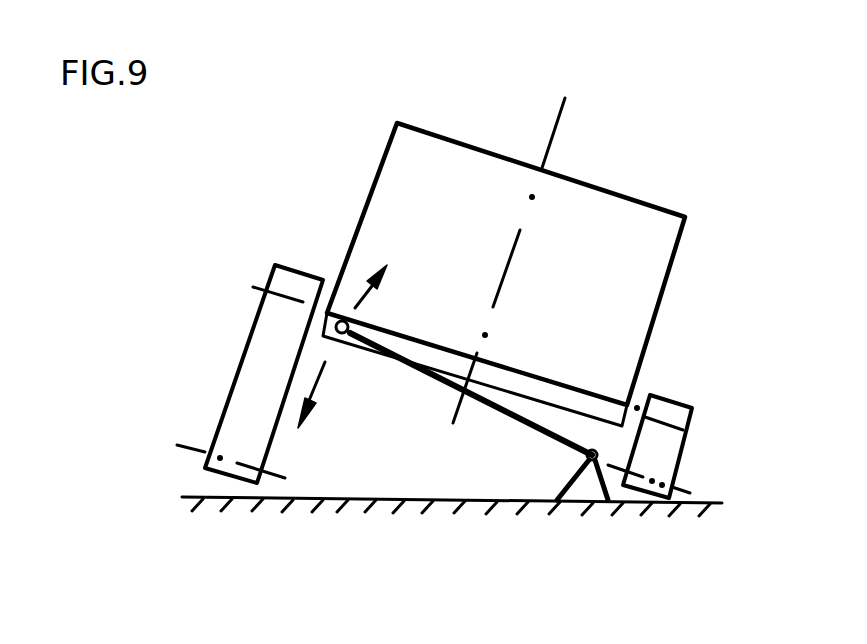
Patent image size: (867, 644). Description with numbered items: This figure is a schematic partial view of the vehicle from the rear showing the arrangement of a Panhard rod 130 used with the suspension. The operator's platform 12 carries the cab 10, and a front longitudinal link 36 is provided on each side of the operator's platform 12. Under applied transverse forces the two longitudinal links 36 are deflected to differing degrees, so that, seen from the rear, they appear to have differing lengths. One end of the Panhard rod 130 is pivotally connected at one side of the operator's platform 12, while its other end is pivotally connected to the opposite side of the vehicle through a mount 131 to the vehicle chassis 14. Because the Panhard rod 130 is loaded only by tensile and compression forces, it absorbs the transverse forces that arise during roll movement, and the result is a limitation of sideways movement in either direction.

The cab 10 is at (580, 217).
The operator's platform 12 is at (565, 396).
The vehicle chassis 14 is at (443, 503).
The front longitudinal link 36 is at (267, 362).
The Panhard rod 130 is at (503, 410).
The mount 131 is at (585, 490).